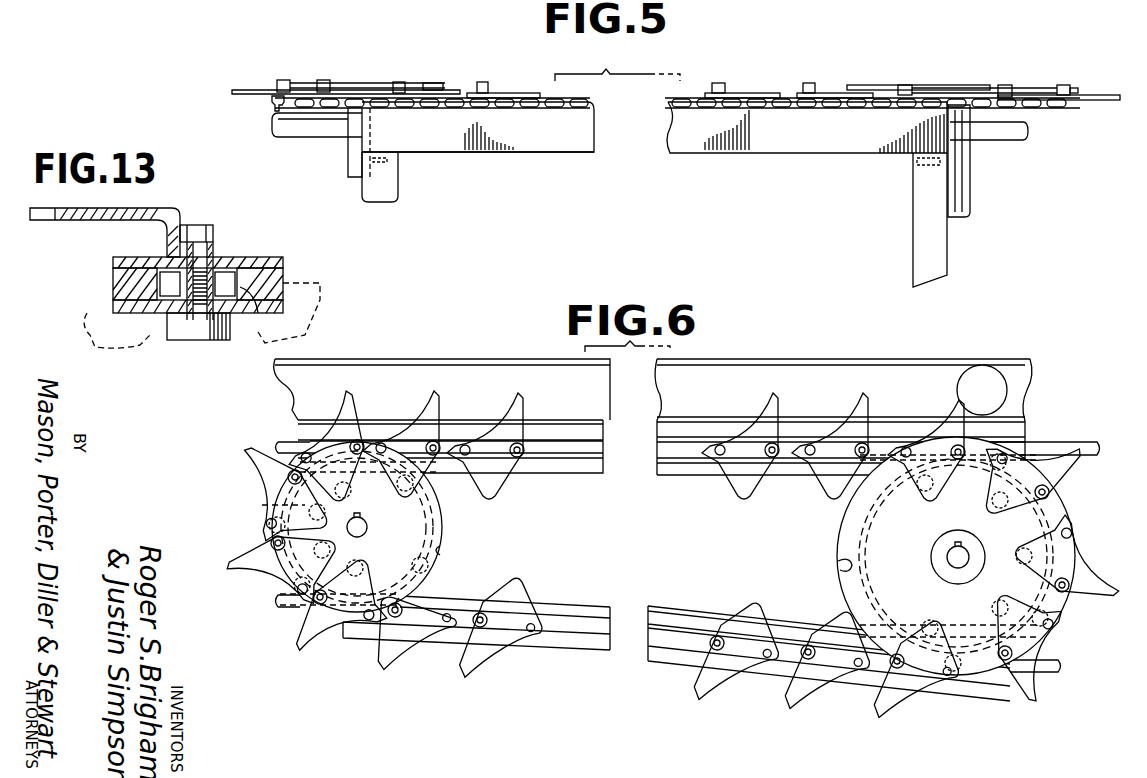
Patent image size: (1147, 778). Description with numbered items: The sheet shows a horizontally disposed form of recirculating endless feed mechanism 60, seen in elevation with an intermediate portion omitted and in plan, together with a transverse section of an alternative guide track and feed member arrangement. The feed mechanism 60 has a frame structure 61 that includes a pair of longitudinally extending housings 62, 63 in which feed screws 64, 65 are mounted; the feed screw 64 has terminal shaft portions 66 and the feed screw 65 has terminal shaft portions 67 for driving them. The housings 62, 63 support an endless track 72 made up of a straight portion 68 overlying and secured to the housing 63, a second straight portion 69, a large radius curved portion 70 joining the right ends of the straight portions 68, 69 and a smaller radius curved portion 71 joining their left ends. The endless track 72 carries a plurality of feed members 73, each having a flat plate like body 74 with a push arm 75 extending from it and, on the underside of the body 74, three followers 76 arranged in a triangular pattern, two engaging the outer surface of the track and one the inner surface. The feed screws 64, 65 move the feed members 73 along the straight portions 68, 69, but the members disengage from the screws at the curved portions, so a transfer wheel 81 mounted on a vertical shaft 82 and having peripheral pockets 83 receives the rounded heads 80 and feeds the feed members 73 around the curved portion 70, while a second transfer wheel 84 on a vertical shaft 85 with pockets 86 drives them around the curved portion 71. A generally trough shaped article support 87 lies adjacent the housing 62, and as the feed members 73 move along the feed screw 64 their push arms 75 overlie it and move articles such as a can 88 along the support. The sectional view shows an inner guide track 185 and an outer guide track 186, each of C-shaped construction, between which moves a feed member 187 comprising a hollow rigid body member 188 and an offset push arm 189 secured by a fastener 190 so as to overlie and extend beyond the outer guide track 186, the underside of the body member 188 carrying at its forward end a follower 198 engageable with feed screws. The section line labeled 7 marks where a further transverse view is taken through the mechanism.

In FIG. 5, the section line 7- 7 is at (960, 90).
In FIG. 5, the feed mechanism 60 is at (316, 166).
In FIG. 5, the frame structure 61 is at (405, 189).
In FIG. 6, the housing 62 is at (585, 383).
In FIG. 5, the housing 63 is at (528, 148).
In FIG. 6, the housing 63 is at (573, 650).
In FIG. 6, the feed screw 64 is at (575, 468).
In FIG. 6, the feed screw 65 is at (573, 614).
In FIG. 6, the terminal shaft portions 66 is at (290, 440).
In FIG. 5, the terminal shaft portions 67 is at (283, 128).
In FIG. 6, the terminal shaft portions 67 is at (290, 604).
In FIG. 6, the straight portion 68 is at (690, 471).
In FIG. 6, the straight portion 69 is at (672, 610).
In FIG. 6, the large radius curved portion 70 is at (1045, 512).
In FIG. 6, the smaller radius curved portion 71 is at (267, 507).
In FIG. 5, the endless track 72 is at (618, 97).
In FIG. 6, the endless track 72 is at (530, 478).
In FIG. 5, the feed member 73 is at (507, 92).
In FIG. 6, the feed member 73 is at (490, 472).
In FIG. 6, the flat plate like body 74 is at (502, 472).
In FIG. 6, the push arm 75 is at (523, 400).
In FIG. 6, the followers 76 is at (518, 580).
In FIG. 5, the rounded heads 80 is at (906, 86).
In FIG. 5, the transfer wheel 81 is at (985, 86).
In FIG. 6, the transfer wheel 81 is at (858, 540).
In FIG. 6, the vertical shaft 82 is at (960, 562).
In FIG. 6, the pockets 83 is at (838, 566).
In FIG. 5, the second transfer wheel 84 is at (372, 73).
In FIG. 6, the second transfer wheel 84 is at (430, 524).
In FIG. 5, the vertical shaft 85 is at (350, 155).
In FIG. 6, the vertical shaft 85 is at (368, 524).
In FIG. 6, the pockets 86 is at (440, 552).
In FIG. 6, the article support 87 is at (885, 359).
In FIG. 6, the can 88 is at (1003, 375).
In FIG. 13, the inner guide track 185 is at (283, 275).
In FIG. 13, the outer guide track 186 is at (118, 284).
In FIG. 13, the feed member 187 is at (158, 240).
In FIG. 13, the body member 188 is at (262, 311).
In FIG. 13, the push arm 189 is at (165, 208).
In FIG. 13, the fastener 190 is at (213, 228).
In FIG. 13, the follower 198 is at (190, 340).